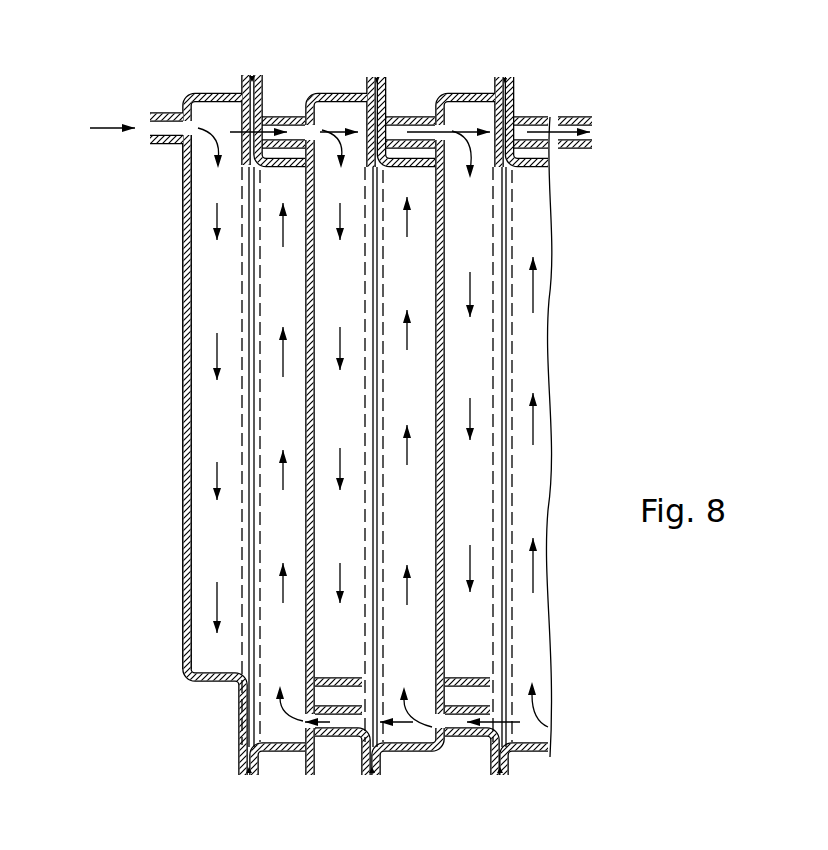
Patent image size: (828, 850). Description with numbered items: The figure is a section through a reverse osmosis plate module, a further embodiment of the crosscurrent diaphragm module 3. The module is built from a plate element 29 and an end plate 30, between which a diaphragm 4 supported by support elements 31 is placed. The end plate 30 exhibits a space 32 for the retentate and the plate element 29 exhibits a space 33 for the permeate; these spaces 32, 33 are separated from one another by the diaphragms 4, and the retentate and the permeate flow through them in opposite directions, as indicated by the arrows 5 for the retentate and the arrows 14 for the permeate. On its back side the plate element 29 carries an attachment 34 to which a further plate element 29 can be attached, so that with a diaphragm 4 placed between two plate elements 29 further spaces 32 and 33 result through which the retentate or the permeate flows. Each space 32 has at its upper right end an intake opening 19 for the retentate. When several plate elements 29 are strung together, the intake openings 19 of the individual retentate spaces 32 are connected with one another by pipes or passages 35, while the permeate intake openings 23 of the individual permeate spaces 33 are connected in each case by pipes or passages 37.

The crosscurrent diaphragm module 3 is at (200, 78).
The diaphragm 4 is at (375, 492).
The arrow 5 is at (215, 347).
The arrow 14 is at (282, 360).
The intake opening 19 is at (172, 115).
The permeate intake opening 23 is at (302, 722).
The plate element 29 is at (305, 628).
The end plate 30 is at (183, 257).
The support element 31 is at (240, 435).
The space for the retentate 32 is at (207, 178).
The space for the permeate 33 is at (277, 553).
The attachment 34 is at (352, 101).
The pipe or passage 35 is at (284, 117).
The pipe or passage 37 is at (333, 736).